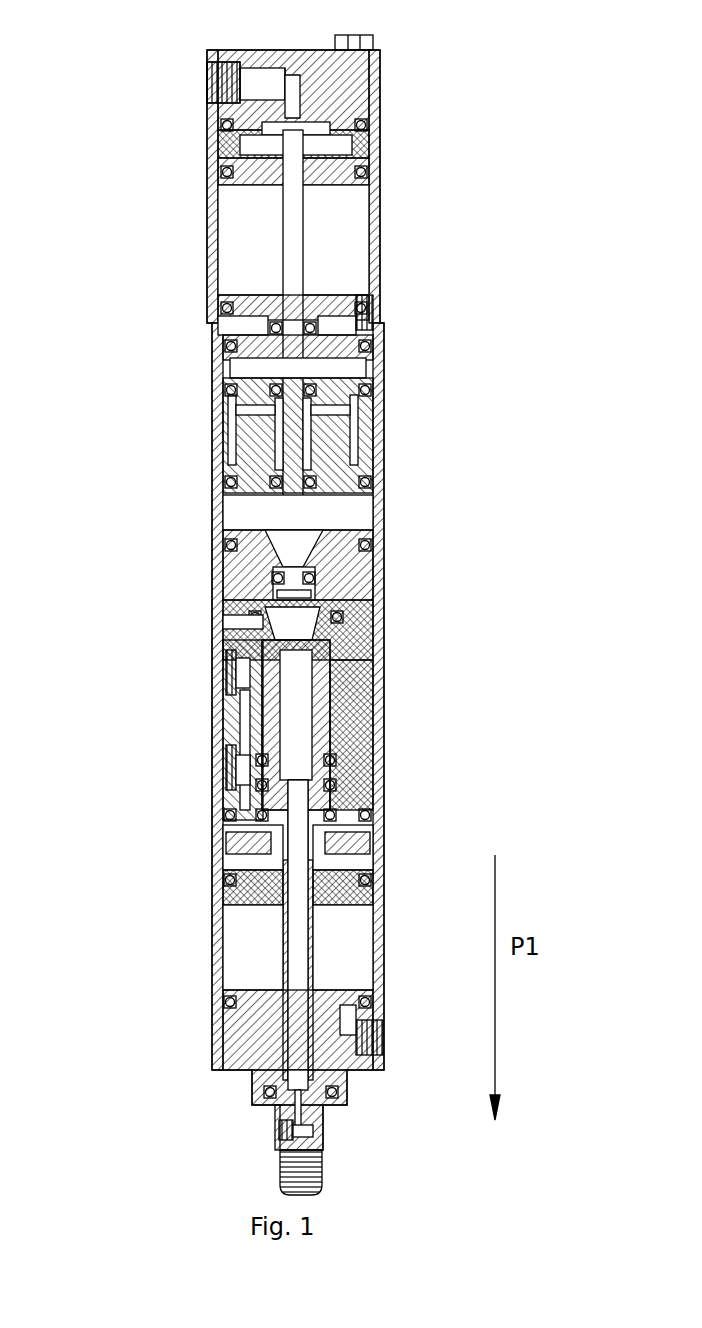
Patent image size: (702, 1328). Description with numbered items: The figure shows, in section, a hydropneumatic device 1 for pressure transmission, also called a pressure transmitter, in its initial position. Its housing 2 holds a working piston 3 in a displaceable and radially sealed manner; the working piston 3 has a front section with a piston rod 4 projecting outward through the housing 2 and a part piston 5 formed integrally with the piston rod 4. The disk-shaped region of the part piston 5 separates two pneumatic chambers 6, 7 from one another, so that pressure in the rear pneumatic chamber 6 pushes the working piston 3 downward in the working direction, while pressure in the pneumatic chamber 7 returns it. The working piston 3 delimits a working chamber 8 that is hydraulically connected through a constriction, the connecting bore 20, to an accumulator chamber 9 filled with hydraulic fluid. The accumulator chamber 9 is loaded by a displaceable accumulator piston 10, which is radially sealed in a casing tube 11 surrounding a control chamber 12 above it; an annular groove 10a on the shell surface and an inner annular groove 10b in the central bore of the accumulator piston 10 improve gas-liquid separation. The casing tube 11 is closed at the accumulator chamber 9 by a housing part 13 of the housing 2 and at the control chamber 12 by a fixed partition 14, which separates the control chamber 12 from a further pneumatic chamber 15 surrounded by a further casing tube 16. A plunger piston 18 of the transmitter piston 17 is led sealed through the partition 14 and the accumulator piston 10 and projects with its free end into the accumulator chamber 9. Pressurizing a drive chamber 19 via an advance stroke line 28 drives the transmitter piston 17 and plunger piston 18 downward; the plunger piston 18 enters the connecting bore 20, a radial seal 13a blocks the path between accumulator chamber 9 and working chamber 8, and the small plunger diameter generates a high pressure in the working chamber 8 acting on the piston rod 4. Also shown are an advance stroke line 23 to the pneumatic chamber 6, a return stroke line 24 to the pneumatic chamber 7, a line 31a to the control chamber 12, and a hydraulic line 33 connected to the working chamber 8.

The hydropneumatic device 1 is at (497, 193).
The housing 2 is at (384, 778).
The working piston 3 is at (384, 800).
The piston rod 4 is at (325, 1105).
The part piston 5 is at (384, 860).
The pneumatic chamber 6 is at (384, 832).
The pneumatic chamber 7 is at (363, 960).
The working chamber 8 is at (384, 655).
The accumulator chamber 9 is at (360, 512).
The accumulator piston 10 is at (345, 437).
The annular groove 10a is at (228, 413).
The inner annular groove 10b is at (260, 440).
The casing tube 11 is at (384, 358).
The control chamber 12 is at (350, 366).
The housing part 13 is at (287, 617).
The radial seal 13a is at (268, 578).
The partition 14 is at (228, 300).
The further pneumatic chamber 15 is at (207, 200).
The further casing tube 16 is at (380, 122).
The transmitter piston 17 is at (380, 158).
The plunger piston 18 is at (305, 232).
The drive chamber 19 is at (298, 100).
The connecting bore 20 is at (320, 550).
The advance stroke line 23 is at (240, 770).
The return stroke line 24 is at (238, 955).
The advance stroke line 28 is at (268, 85).
The line 31a is at (227, 324).
The hydraulic line 33 is at (262, 621).